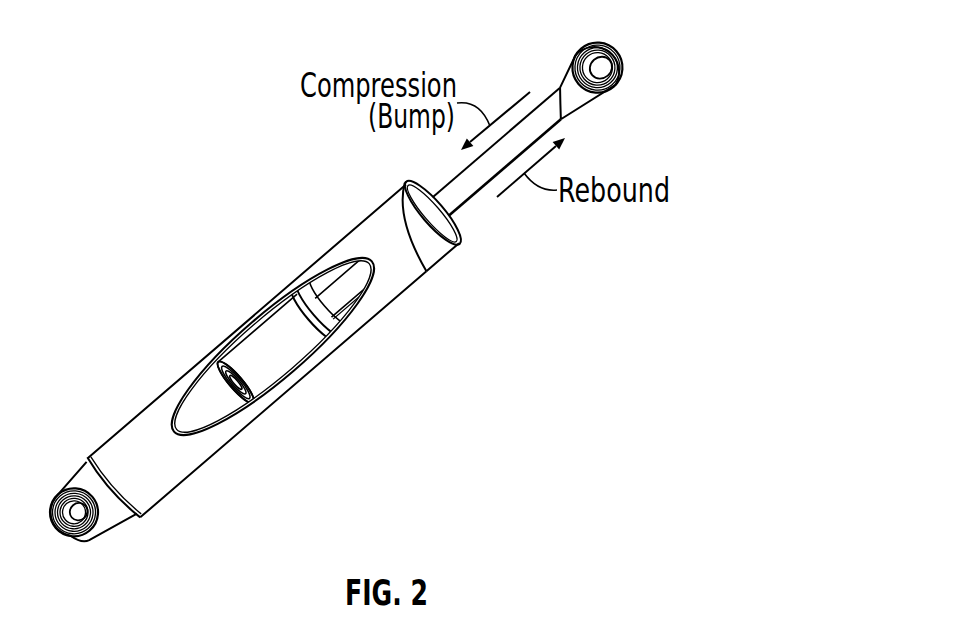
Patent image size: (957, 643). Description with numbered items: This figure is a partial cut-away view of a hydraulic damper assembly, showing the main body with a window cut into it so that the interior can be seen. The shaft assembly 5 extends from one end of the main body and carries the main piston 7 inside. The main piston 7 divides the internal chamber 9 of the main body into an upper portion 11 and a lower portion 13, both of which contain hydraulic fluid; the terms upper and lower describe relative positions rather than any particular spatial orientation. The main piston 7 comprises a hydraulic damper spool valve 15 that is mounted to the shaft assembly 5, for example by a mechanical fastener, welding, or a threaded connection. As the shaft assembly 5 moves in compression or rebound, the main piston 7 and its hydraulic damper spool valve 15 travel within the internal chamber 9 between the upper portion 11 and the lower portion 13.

The shaft assembly 5 is at (556, 87).
The main piston 7 is at (296, 296).
The internal chamber 9 is at (218, 377).
The upper portion 11 is at (337, 321).
The lower portion 13 is at (207, 424).
The hydraulic damper spool valve 15 is at (260, 355).